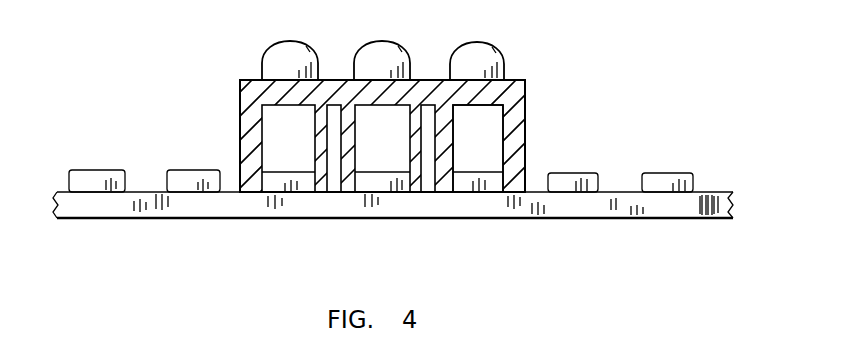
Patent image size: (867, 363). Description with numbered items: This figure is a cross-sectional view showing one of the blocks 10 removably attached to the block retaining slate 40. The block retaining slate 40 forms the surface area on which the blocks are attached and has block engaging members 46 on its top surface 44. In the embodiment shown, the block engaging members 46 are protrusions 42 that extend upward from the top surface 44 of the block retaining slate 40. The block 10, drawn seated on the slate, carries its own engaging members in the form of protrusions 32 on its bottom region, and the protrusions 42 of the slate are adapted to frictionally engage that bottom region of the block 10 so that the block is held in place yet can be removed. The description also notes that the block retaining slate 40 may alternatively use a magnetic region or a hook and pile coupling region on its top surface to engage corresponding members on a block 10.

The block 10 is at (552, 58).
The protrusions 32 is at (456, 146).
The block retaining slate 40 is at (568, 212).
The protrusions 42 is at (570, 177).
The top surface 44 is at (707, 193).
The block engaging members 46 is at (186, 150).